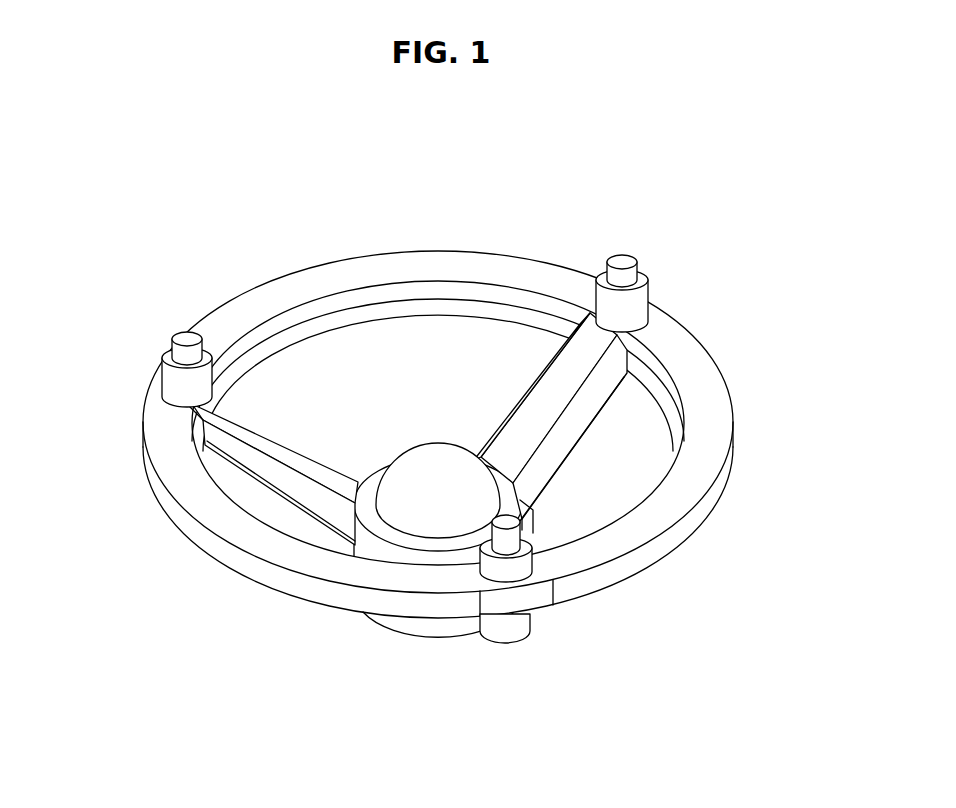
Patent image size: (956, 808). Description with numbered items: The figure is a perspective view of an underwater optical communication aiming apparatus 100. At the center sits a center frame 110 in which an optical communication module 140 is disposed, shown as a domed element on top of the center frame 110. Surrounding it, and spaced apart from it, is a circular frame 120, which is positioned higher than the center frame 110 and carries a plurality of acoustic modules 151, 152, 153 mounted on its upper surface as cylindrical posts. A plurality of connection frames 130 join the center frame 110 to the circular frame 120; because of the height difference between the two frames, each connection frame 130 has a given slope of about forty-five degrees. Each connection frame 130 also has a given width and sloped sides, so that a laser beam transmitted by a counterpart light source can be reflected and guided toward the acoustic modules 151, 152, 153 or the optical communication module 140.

The underwater optical communication aiming apparatus 100 is at (345, 206).
The center frame 110 is at (380, 533).
The circular frame 120 is at (718, 399).
The connection frame 130 is at (258, 417).
The optical communication module 140 is at (436, 455).
The acoustic module 151 is at (640, 300).
The acoustic module 152 is at (506, 574).
The acoustic module 153 is at (168, 376).